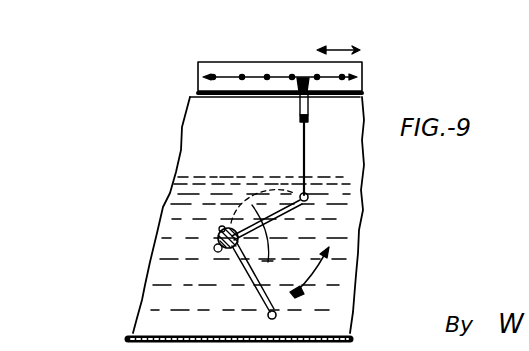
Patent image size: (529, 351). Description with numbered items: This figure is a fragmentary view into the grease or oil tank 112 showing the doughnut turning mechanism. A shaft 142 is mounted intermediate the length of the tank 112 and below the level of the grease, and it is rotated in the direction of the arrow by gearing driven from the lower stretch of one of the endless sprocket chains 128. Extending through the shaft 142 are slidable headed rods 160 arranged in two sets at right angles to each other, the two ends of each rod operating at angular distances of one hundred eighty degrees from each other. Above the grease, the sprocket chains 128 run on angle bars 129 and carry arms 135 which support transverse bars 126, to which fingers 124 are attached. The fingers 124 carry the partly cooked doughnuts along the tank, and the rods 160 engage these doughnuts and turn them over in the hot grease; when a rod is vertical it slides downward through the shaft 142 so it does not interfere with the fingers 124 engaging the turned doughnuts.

The grease or oil tank 112 is at (133, 334).
The fingers 124 is at (301, 147).
The transverse bars 126 is at (308, 118).
The endless sprocket chains 128 is at (256, 77).
The angle bars 129 is at (362, 67).
The arms 135 is at (299, 106).
The shaft 142 is at (219, 236).
The slidable headed rods 160 is at (252, 279).